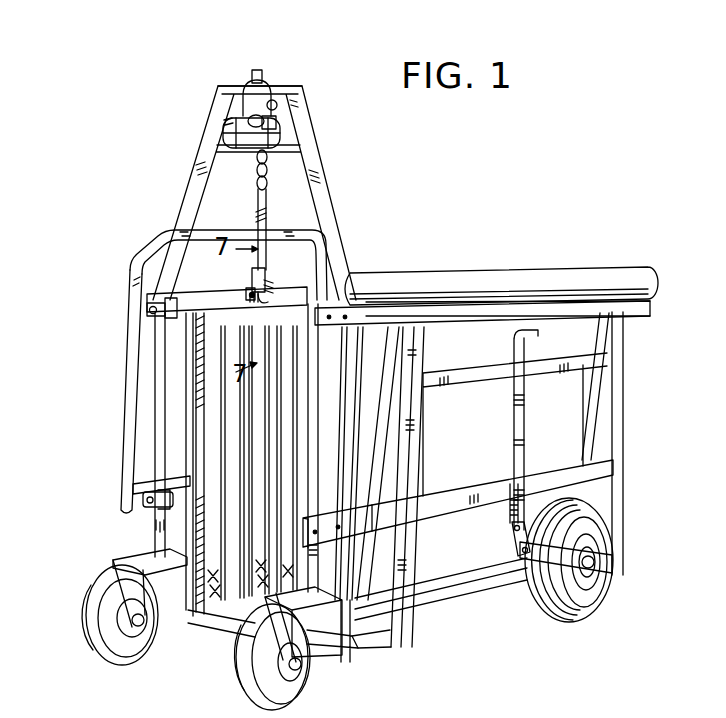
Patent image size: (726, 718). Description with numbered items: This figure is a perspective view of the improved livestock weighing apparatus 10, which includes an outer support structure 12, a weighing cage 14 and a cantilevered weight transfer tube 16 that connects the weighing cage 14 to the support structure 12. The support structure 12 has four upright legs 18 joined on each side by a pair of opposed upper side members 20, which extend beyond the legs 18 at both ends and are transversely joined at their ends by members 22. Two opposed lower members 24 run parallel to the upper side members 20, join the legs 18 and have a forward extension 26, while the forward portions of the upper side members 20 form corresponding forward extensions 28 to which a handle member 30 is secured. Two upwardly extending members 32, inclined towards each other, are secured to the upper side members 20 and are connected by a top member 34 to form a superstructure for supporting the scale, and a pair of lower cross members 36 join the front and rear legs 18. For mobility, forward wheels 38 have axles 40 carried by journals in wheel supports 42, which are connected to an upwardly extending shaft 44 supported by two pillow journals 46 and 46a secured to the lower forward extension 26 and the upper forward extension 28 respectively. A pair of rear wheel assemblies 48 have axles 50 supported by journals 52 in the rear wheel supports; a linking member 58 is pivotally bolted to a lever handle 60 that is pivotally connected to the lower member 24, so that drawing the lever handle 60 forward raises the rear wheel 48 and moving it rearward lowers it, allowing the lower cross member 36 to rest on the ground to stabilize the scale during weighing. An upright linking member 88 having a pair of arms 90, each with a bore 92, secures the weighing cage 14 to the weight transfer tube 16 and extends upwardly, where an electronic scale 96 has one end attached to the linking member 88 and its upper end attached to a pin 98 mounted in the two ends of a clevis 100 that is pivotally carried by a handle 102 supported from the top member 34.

The livestock weighing apparatus 10 is at (74, 244).
The outer support structure 12 is at (624, 456).
The weighing cage 14 is at (450, 448).
The cantilevered weight transfer tube 16 is at (632, 272).
The upright legs 18 is at (620, 354).
The upper side members 20 is at (452, 322).
The transverse members 22 is at (293, 322).
The lower members 24 is at (460, 496).
The forward extension of lower member 26 is at (188, 492).
The forward extension of upper side member 28 is at (147, 303).
The handle member 30 is at (172, 232).
The upwardly extending members 32 is at (192, 187).
The top member 34 is at (245, 91).
The lower cross members 36 is at (374, 644).
The forward wheels 38 is at (128, 660).
The axles 40 is at (142, 626).
The wheel supports 42 is at (166, 594).
The upwardly extending shaft 44 is at (154, 528).
The pillow journal 46 is at (142, 499).
The pillow journal 46a is at (166, 305).
The rear wheel assemblies 48 is at (608, 599).
The axles 50 is at (594, 562).
The journals 52 is at (563, 585).
The linking member 58 is at (510, 543).
The lever handle 60 is at (514, 397).
The upright linking member 88 is at (258, 214).
The arms 90 is at (249, 295).
The bore 92 is at (266, 287).
The electronic scale 96 is at (226, 136).
The pin 98 is at (272, 124).
The clevis 100 is at (273, 88).
The handle 102 is at (260, 72).